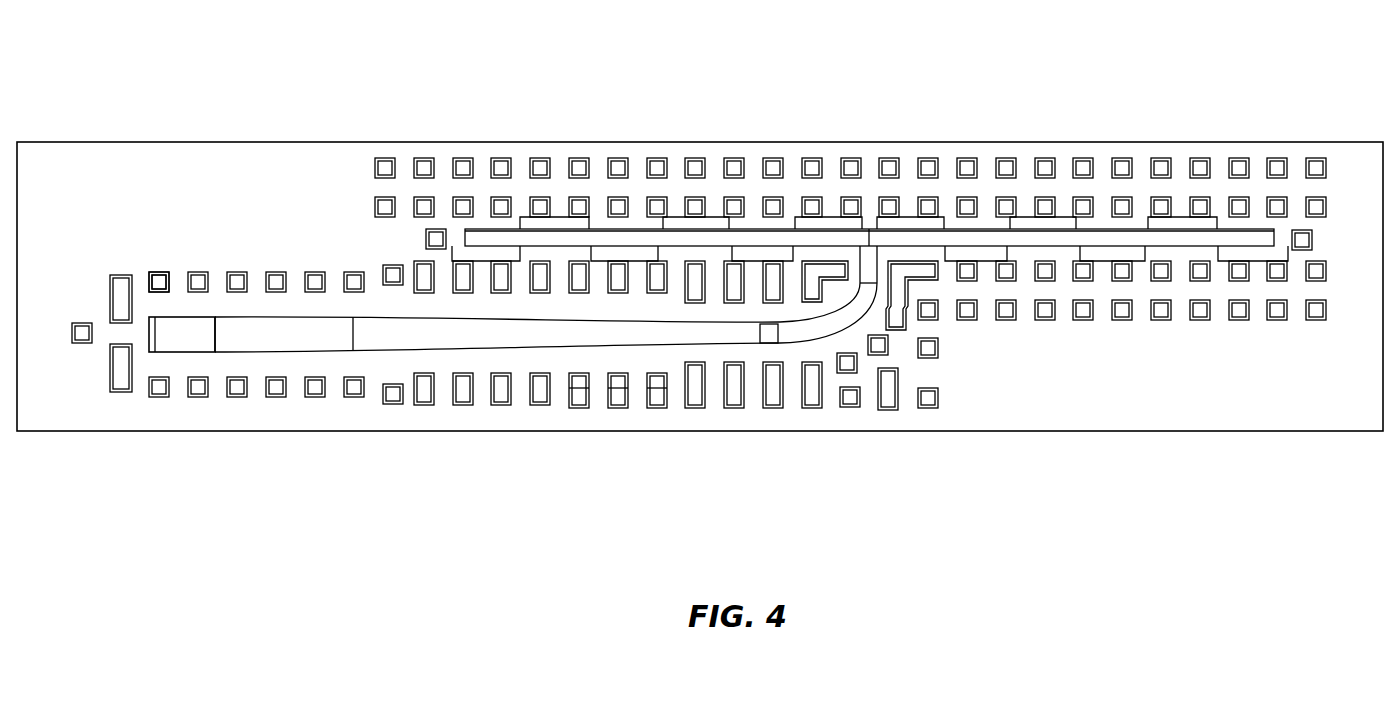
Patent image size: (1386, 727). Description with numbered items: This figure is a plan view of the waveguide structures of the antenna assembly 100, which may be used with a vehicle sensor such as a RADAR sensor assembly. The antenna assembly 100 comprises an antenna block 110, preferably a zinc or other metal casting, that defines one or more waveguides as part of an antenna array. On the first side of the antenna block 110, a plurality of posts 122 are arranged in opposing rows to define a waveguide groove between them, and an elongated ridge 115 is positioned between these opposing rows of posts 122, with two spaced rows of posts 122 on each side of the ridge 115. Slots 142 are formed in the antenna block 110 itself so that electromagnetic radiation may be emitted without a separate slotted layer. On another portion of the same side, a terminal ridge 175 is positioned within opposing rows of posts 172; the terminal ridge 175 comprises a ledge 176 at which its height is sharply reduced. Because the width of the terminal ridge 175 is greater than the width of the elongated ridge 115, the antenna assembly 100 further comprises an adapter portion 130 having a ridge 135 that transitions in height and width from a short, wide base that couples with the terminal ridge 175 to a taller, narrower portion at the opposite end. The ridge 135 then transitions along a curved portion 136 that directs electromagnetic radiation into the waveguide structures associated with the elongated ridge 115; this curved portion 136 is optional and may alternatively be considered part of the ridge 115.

The antenna assembly 100 is at (457, 115).
The antenna block 110 is at (1352, 148).
The elongated ridge 115 is at (767, 240).
The posts 122 is at (1316, 317).
The adapter portion 130 is at (560, 364).
The ridge 135 is at (447, 337).
The curved portion 136 is at (838, 345).
The slots 142 is at (572, 223).
The posts 172 is at (159, 278).
The terminal ridge 175 is at (187, 330).
The ledge 176 is at (216, 332).